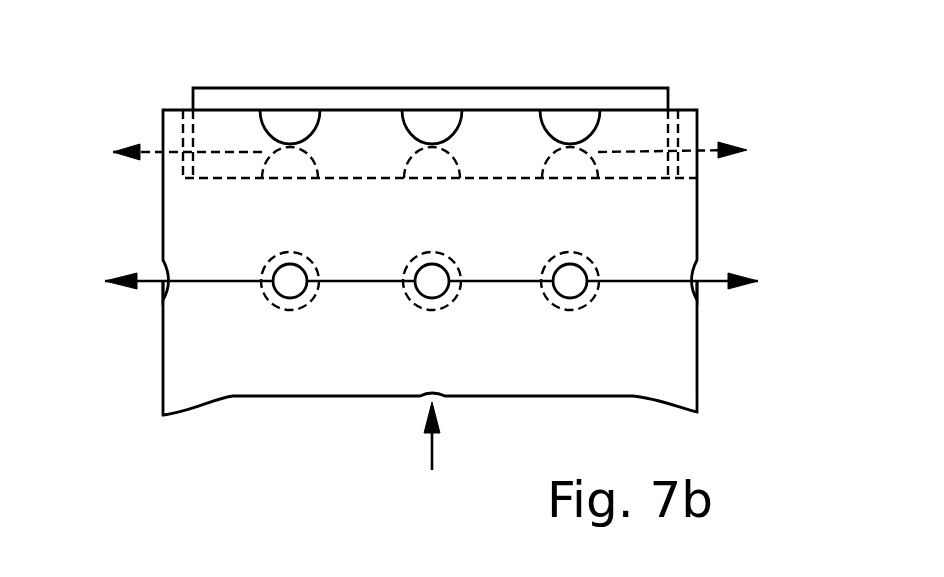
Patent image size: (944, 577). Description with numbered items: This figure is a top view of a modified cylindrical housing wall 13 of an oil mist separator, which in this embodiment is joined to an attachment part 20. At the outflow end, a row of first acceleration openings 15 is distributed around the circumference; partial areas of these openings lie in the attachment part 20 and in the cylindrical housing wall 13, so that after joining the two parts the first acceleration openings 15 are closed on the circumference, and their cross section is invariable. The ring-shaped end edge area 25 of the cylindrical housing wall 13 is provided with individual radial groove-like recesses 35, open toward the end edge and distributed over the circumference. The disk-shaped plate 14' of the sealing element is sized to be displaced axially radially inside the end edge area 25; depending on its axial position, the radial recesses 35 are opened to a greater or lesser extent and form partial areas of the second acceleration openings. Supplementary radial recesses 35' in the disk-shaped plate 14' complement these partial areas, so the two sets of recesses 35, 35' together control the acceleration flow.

The cylindrical housing wall 13 is at (670, 360).
The attachment part 20 is at (668, 222).
The ring-shaped end edge 25 is at (695, 168).
The radial groove-like recesses 35 is at (442, 76).
The radial recesses 35' is at (430, 93).
The disk-shaped plate 14' is at (430, 59).
The first acceleration openings 15 is at (292, 290).